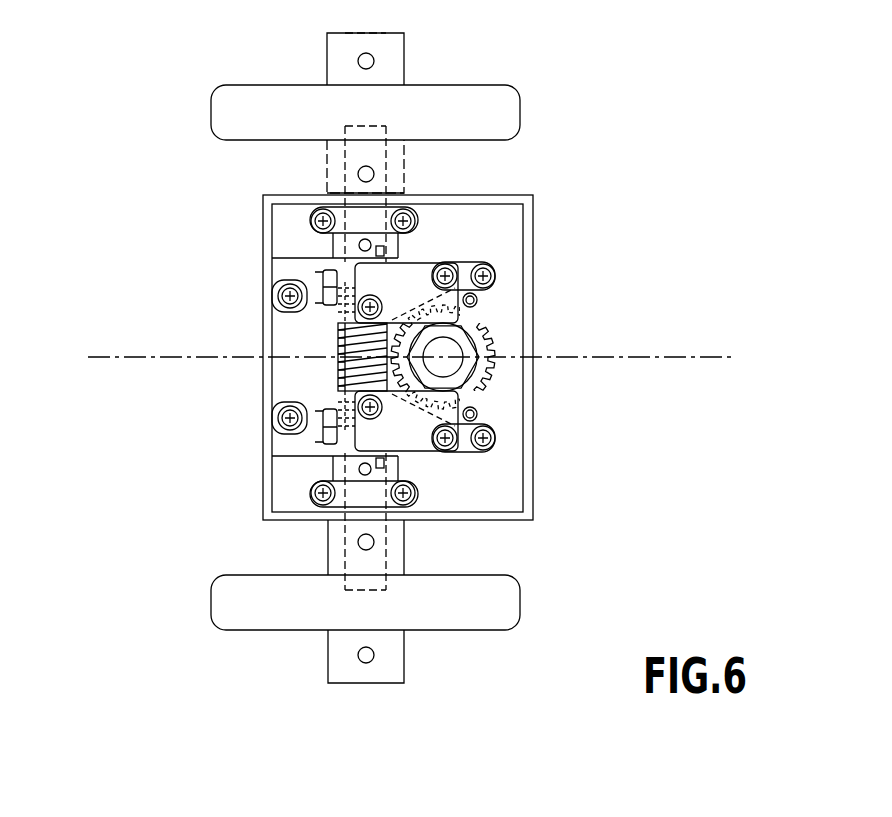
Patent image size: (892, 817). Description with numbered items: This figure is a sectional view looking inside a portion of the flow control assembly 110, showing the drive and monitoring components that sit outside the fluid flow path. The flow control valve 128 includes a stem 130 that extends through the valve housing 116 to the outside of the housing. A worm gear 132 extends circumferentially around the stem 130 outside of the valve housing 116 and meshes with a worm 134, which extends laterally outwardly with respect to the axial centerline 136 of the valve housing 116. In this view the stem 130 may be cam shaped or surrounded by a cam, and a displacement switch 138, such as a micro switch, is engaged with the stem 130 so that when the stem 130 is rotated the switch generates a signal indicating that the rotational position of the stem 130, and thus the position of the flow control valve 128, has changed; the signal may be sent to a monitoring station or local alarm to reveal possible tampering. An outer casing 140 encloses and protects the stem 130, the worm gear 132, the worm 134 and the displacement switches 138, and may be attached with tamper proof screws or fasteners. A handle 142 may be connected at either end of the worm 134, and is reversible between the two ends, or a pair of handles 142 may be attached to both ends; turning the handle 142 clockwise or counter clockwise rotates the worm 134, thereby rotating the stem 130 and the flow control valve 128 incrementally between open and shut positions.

The flow control assembly 110 is at (725, 92).
The valve housing 116 is at (500, 495).
The flow control valve 128 is at (516, 309).
The stem 130 is at (441, 357).
The worm gear 132 is at (490, 385).
The worm 134 is at (352, 362).
The axial centerline 136 is at (754, 426).
The displacement switch 138 is at (422, 272).
The outer casing 140 is at (533, 438).
The handle 142 is at (521, 116).